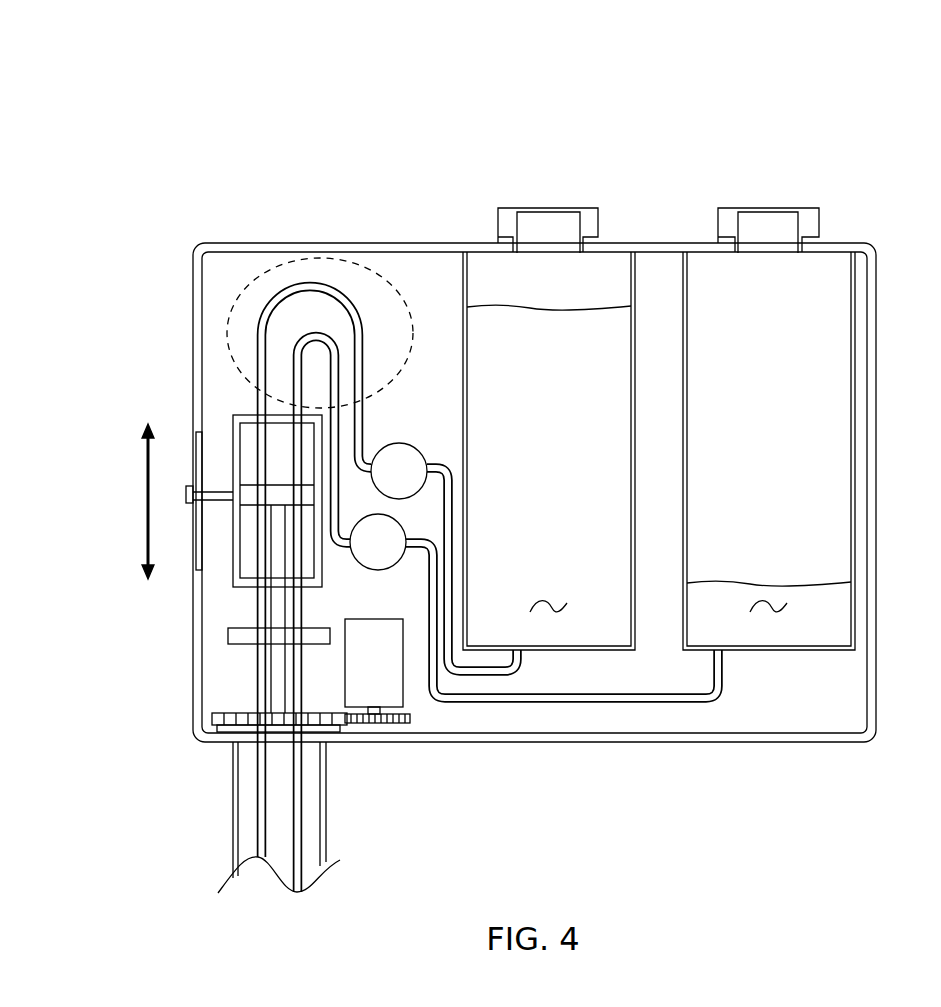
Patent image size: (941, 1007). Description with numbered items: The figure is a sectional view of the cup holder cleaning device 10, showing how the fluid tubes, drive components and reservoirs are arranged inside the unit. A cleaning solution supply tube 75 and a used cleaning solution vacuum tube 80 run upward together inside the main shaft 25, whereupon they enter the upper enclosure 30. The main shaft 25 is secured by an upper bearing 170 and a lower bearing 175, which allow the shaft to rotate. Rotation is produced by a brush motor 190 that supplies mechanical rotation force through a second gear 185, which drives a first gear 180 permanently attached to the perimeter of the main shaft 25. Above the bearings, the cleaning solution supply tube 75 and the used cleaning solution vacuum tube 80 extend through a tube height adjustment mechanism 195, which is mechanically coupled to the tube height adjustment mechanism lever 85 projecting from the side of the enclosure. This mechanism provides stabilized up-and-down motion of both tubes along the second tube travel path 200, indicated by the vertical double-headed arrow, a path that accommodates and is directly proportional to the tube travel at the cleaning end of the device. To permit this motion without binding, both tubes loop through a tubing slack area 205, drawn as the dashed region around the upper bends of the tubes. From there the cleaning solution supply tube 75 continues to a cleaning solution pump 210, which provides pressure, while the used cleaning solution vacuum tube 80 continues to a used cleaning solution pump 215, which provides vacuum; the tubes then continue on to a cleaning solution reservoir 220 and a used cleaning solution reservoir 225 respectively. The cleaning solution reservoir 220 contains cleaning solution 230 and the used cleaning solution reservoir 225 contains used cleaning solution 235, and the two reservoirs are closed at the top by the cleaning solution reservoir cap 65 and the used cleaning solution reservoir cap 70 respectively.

The cup holder cleaning device 10 is at (213, 193).
The main shaft 25 is at (322, 852).
The upper enclosure 30 is at (463, 250).
The cleaning solution reservoir cap 65 is at (541, 215).
The used cleaning solution reservoir cap 70 is at (767, 215).
The cleaning solution supply tube 75 is at (298, 286).
The used cleaning solution vacuum tube 80 is at (318, 338).
The tube height adjustment mechanism lever 85 is at (190, 501).
The upper bearing 170 is at (230, 638).
The lower bearing 175 is at (242, 733).
The first gear 180 is at (215, 720).
The second gear 185 is at (373, 723).
The brush motor 190 is at (375, 665).
The tube height adjustment mechanism 195 is at (238, 430).
The second tube travel path "t2" 200 is at (105, 470).
The tubing slack area 205 is at (255, 275).
The cleaning solution pump 210 is at (400, 466).
The used cleaning solution pump 215 is at (380, 545).
The cleaning solution reservoir 220 is at (633, 292).
The used cleaning solution reservoir 225 is at (855, 276).
The cleaning solution 230 is at (552, 612).
The used cleaning solution 235 is at (770, 612).